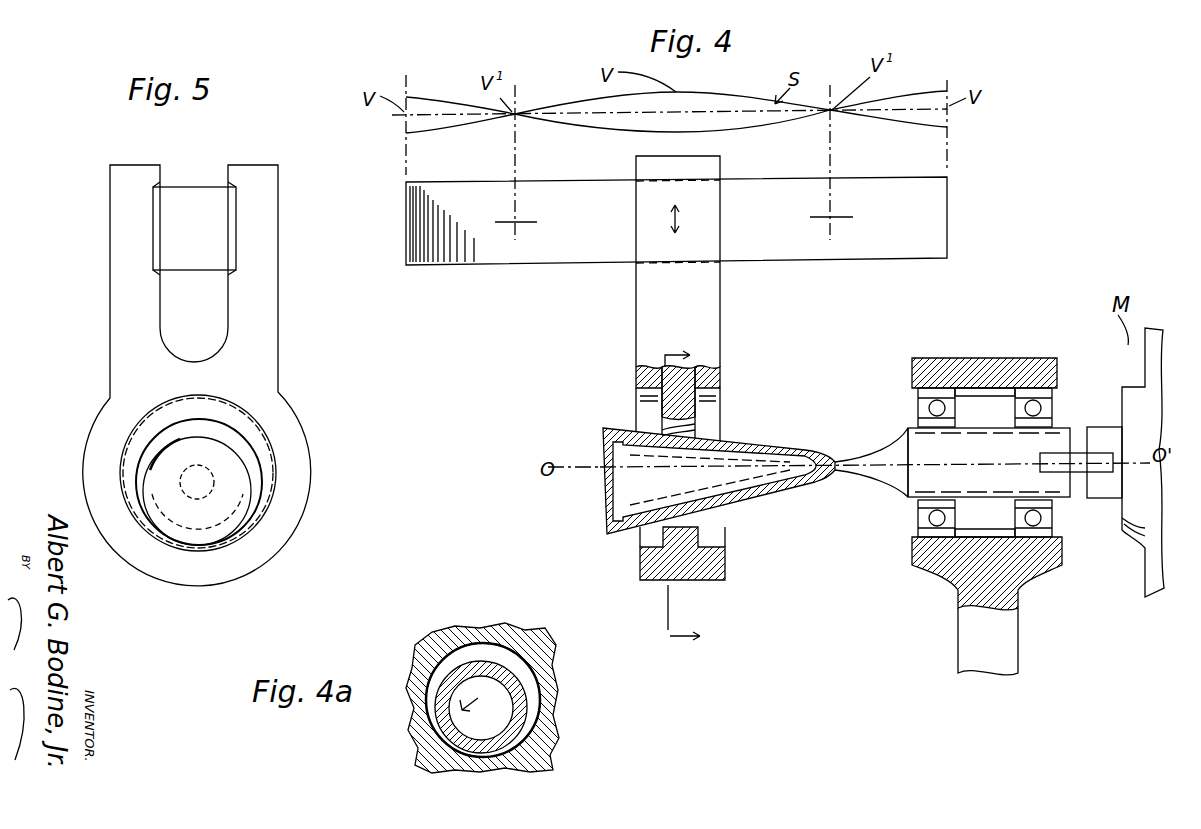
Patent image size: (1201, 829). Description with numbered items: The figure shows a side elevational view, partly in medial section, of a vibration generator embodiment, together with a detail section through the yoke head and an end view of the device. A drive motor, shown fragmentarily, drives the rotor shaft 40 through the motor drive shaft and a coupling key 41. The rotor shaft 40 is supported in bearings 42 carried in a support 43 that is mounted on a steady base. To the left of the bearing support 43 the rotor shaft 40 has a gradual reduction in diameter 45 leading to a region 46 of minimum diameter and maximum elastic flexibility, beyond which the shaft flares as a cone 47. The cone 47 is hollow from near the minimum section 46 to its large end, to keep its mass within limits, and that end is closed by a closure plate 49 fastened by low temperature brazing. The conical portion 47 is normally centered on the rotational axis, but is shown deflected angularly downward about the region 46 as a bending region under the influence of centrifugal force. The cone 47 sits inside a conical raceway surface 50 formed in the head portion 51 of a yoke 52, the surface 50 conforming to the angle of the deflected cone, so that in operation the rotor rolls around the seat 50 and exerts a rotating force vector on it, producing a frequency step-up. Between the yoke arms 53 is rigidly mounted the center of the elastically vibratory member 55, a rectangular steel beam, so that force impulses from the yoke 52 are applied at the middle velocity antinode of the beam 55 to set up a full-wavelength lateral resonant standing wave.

In FIG. 4, the rotor shaft 40 is at (990, 428).
In FIG. 4, the coupling key 41 is at (1076, 453).
In FIG. 4, the bearings 42 is at (934, 386).
In FIG. 4, the bearing support 43 is at (922, 582).
In FIG. 4, the gradual reduction in diameter 45 is at (888, 452).
In FIG. 4, the region of minimum diameter 46 is at (828, 460).
In FIG. 5, the conical portion of rotor shaft 47 is at (155, 447).
In FIG. 4, the conical portion of rotor shaft 47 is at (718, 447).
In FIG. 4A, the conical portion of rotor shaft 47 is at (492, 668).
In FIG. 5, the closure plate 49 is at (238, 484).
In FIG. 4, the closure plate 49 is at (612, 500).
In FIG. 5, the conical raceway surface 50 is at (238, 434).
In FIG. 4, the conical raceway surface 50 is at (660, 432).
In FIG. 4A, the conical raceway surface 50 is at (453, 648).
In FIG. 5, the head portion of yoke 51 is at (305, 447).
In FIG. 4, the head portion of yoke 51 is at (728, 570).
In FIG. 4A, the head portion of yoke 51 is at (546, 658).
In FIG. 5, the yoke 52 is at (299, 375).
In FIG. 4, the yoke 52 is at (625, 327).
In FIG. 5, the yoke arms 53 is at (110, 240).
In FIG. 4, the yoke arms 53 is at (712, 279).
In FIG. 5, the elastically vibratory member 55 is at (200, 187).
In FIG. 4, the elastically vibratory member 55 is at (961, 189).